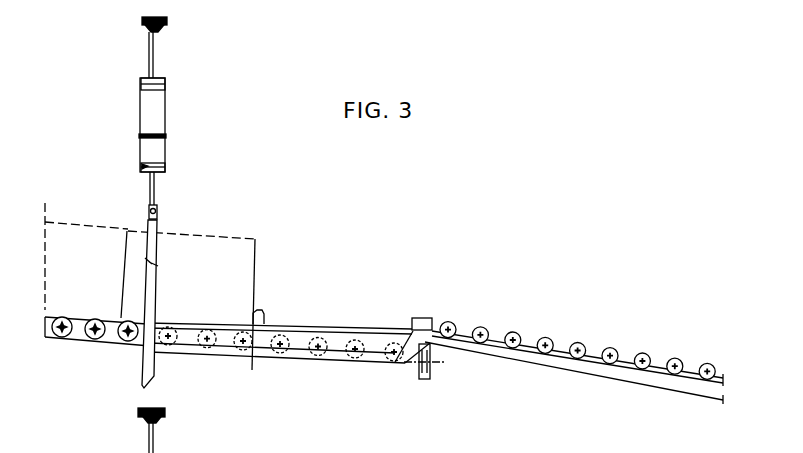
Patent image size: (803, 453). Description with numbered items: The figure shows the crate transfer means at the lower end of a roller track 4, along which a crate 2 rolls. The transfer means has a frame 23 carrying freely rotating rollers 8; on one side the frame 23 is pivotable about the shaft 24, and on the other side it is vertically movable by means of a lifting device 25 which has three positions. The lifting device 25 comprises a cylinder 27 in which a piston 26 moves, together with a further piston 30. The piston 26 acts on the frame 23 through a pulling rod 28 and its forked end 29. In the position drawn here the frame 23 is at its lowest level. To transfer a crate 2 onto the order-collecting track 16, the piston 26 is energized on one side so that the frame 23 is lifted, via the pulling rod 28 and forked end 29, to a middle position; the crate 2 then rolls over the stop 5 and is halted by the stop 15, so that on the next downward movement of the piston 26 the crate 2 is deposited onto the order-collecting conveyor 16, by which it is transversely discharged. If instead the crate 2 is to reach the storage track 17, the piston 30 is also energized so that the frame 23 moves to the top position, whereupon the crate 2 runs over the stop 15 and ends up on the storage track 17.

The crate 2 is at (212, 265).
The roller track 4 is at (74, 330).
The stop 5 is at (262, 313).
The freely rotating rollers 8 is at (318, 344).
The stop 15 is at (421, 318).
The order-collecting track 16 is at (376, 337).
The storage track 17 is at (687, 377).
The frame 23 is at (378, 353).
The shaft 24 is at (658, 370).
The lifting device 25 is at (174, 125).
The piston 26 is at (142, 166).
The cylinder 27 is at (140, 137).
The pulling rod 28 is at (152, 192).
The forked end 29 is at (157, 212).
The piston 30 is at (142, 87).